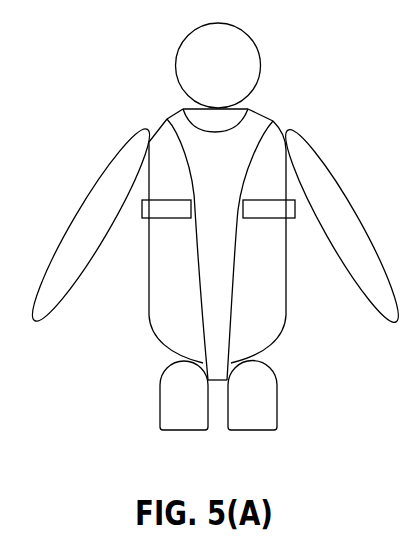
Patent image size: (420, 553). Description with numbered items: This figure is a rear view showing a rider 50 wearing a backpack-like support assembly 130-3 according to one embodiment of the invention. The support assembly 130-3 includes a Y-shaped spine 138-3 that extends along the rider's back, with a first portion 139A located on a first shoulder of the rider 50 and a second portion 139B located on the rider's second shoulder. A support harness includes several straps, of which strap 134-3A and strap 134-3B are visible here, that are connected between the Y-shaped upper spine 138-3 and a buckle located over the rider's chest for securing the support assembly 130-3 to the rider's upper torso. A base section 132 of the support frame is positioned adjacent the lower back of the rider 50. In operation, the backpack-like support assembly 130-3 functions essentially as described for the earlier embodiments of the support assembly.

The rider 50 is at (176, 29).
The backpack-like support assembly 130-3 is at (136, 112).
The first portion 139A is at (173, 116).
The second portion 139B is at (262, 116).
The Y-shaped spine 138-3 is at (232, 192).
The strap 134-3A is at (170, 210).
The strap 134-3B is at (267, 208).
The base section 132 is at (215, 361).